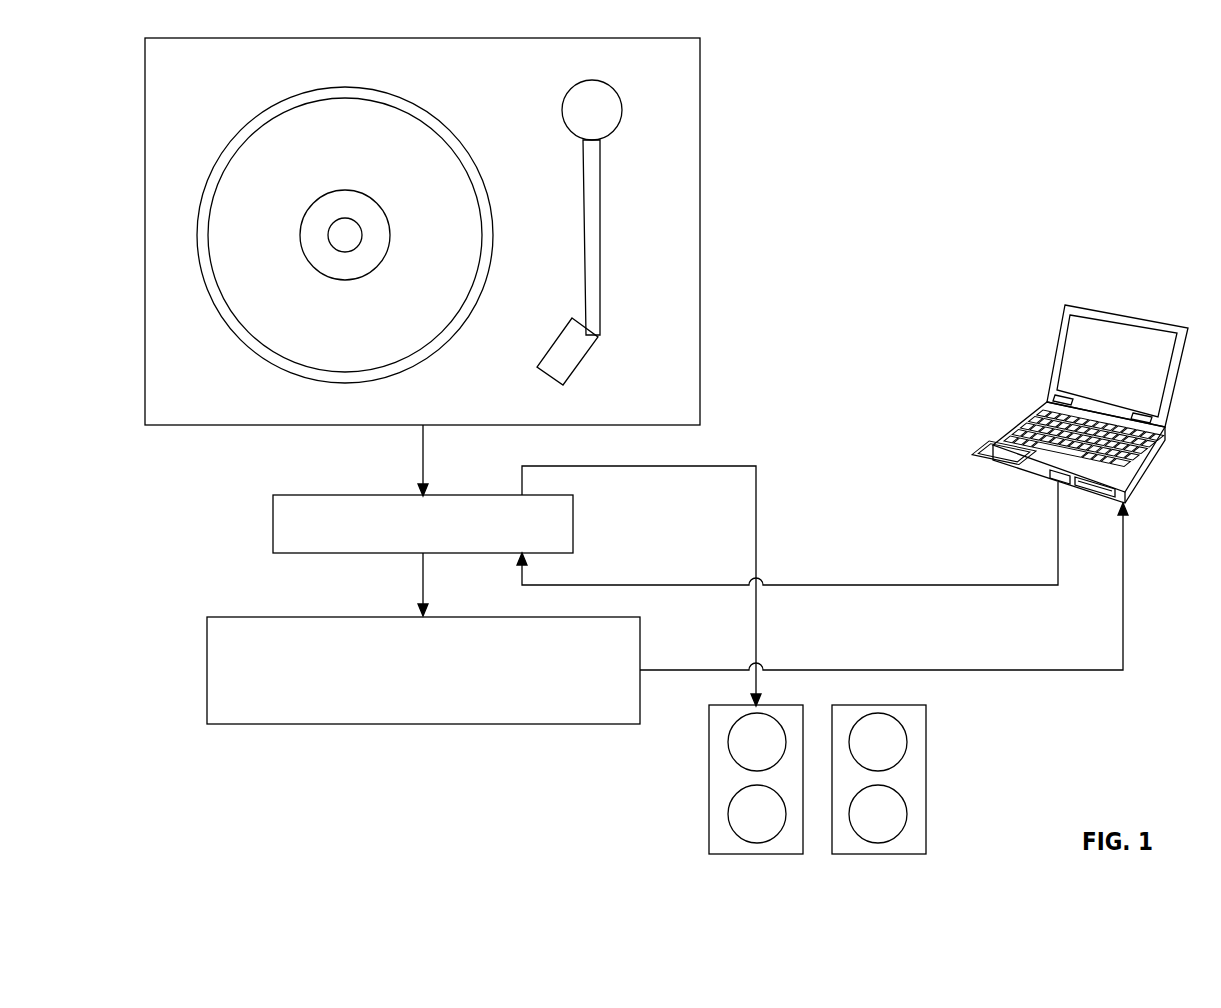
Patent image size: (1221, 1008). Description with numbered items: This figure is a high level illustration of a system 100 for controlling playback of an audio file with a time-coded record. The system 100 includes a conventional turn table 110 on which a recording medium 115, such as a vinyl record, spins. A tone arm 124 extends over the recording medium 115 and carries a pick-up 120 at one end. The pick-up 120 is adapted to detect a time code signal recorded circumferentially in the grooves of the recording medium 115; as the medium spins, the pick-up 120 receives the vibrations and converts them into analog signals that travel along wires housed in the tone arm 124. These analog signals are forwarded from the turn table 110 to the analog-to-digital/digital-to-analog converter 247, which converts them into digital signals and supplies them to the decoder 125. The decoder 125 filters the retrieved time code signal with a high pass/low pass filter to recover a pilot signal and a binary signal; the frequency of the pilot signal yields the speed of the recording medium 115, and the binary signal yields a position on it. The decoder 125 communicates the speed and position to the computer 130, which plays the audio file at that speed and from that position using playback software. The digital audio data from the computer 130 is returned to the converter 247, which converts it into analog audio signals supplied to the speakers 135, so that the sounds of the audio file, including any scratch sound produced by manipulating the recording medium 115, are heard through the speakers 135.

The system 100 is at (1044, 108).
The turn table 110 is at (699, 64).
The recording medium 115 is at (269, 120).
The tone arm 124 is at (602, 184).
The pick-up 120 is at (582, 361).
The analog-to-digital/digital-to-analog converter 247 is at (333, 495).
The decoder 125 is at (268, 617).
The computer 130 is at (1058, 340).
The speakers 135 is at (926, 728).